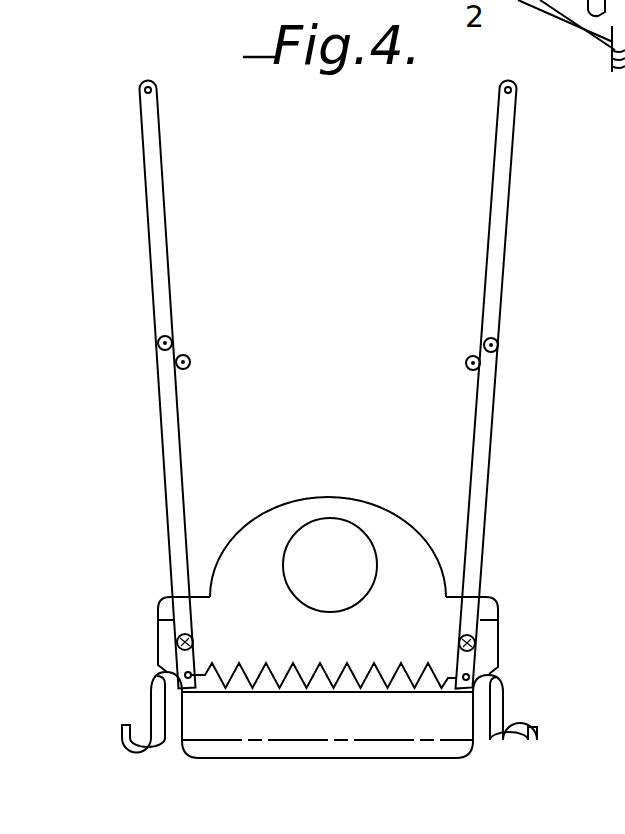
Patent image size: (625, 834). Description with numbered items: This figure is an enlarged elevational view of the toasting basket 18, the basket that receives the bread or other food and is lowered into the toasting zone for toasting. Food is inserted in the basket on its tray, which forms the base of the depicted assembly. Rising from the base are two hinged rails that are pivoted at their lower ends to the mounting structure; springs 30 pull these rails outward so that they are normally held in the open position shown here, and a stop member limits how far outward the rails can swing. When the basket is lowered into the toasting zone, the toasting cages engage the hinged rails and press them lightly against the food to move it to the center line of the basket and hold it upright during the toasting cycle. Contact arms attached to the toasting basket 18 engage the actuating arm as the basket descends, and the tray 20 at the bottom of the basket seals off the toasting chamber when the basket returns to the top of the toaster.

The toasting basket 18 is at (102, 70).
The tray 20 is at (232, 728).
The spring 30 is at (378, 670).